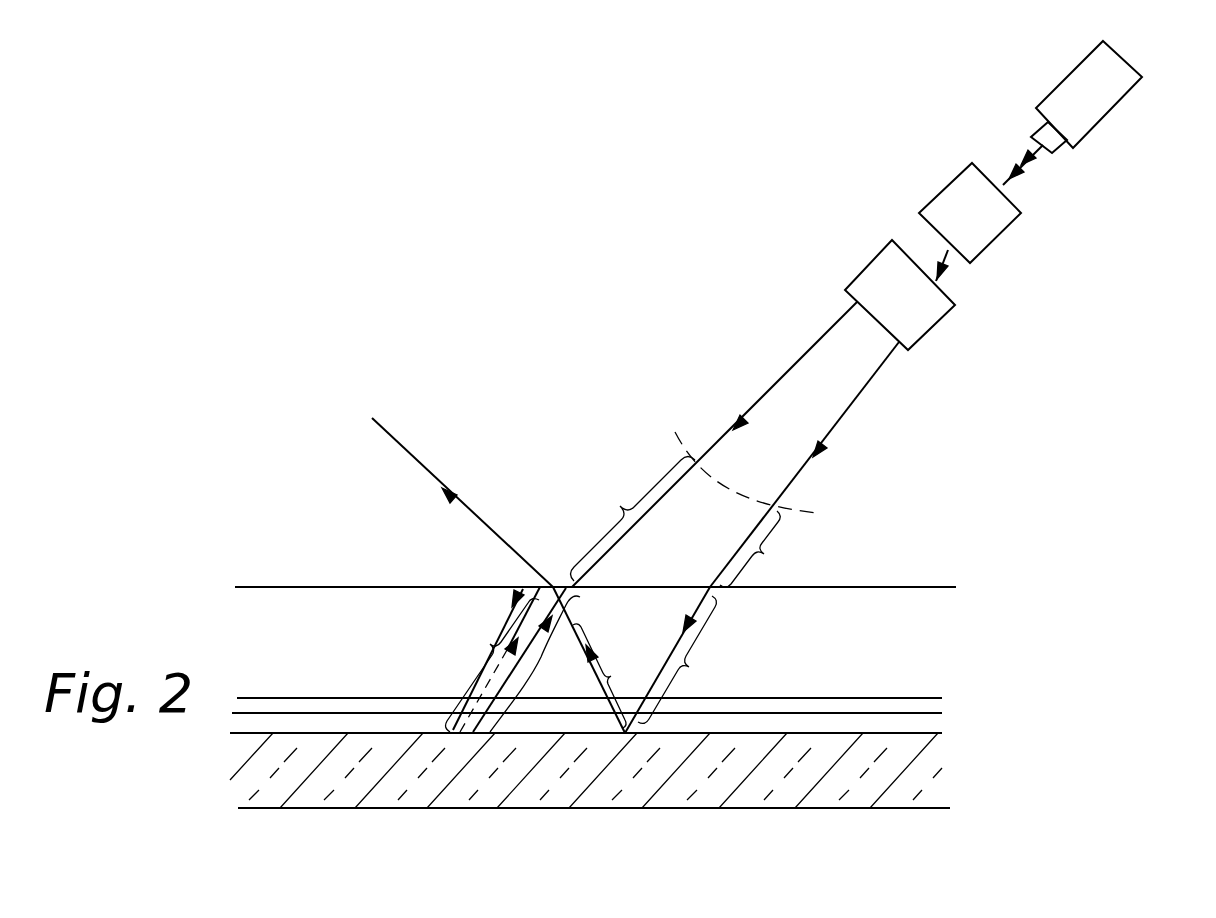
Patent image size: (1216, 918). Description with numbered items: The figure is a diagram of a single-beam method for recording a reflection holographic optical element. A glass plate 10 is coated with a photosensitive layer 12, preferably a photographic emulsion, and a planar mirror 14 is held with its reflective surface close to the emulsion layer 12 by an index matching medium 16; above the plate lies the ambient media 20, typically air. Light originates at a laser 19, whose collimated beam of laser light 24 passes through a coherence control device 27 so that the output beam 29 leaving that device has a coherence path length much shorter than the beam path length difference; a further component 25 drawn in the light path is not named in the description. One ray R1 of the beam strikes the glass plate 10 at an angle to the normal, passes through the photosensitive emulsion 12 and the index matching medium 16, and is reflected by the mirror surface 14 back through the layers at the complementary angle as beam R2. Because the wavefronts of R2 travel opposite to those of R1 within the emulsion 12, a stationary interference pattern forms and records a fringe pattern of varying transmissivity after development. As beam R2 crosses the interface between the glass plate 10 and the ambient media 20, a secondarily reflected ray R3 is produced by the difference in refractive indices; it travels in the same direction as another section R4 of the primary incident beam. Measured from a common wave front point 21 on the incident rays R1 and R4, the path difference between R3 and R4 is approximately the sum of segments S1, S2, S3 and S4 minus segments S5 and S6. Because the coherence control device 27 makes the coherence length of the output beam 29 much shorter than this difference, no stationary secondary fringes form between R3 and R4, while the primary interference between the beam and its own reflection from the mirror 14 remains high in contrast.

The laser 19 is at (1103, 90).
The collimated beam of laser light 24 is at (1048, 177).
The coherence control device 27 is at (1015, 234).
The output beam 29 is at (917, 243).
The polarizer 25 is at (955, 323).
The common wave front point 21 is at (818, 508).
The glass plate 10 is at (847, 617).
The photosensitive layer 12 is at (900, 707).
The index matching medium 16 is at (322, 723).
The planar mirror 14 is at (465, 780).
The ambient media 20 is at (322, 553).
The incident ray R1 is at (804, 464).
The reflected beam R2 is at (592, 660).
The secondarily reflected ray R3 is at (515, 590).
The primary incident beam section R4 is at (714, 444).
The path length segment S1 is at (752, 549).
The path length segment S2 is at (674, 660).
The path length segment S3 is at (592, 640).
The path length segment S4 is at (493, 659).
The path length segment S5 is at (633, 519).
The path length segment S6 is at (570, 626).